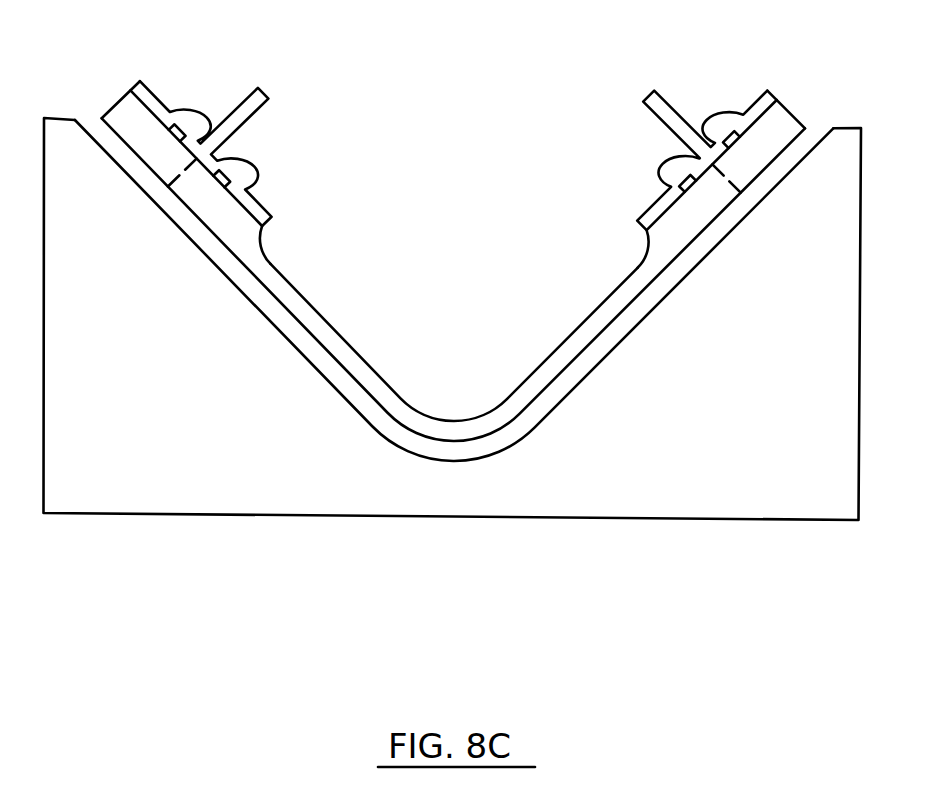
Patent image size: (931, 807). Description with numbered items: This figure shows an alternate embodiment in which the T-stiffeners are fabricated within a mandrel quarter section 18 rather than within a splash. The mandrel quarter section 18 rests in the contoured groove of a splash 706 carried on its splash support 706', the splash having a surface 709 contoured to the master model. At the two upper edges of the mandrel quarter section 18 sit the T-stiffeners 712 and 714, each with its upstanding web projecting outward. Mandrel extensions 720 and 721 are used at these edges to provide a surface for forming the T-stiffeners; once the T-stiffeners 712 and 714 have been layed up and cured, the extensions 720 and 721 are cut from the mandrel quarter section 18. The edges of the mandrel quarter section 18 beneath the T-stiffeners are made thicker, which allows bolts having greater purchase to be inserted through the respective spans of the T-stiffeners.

The mandrel quarter section 18 is at (607, 307).
The splash 706 is at (454, 290).
The splash support 706' is at (453, 361).
The surface 709 is at (325, 343).
The T-stiffener 712 is at (663, 102).
The T-stiffener 714 is at (148, 90).
The mandrel extension 720 is at (125, 110).
The mandrel extension 721 is at (773, 120).